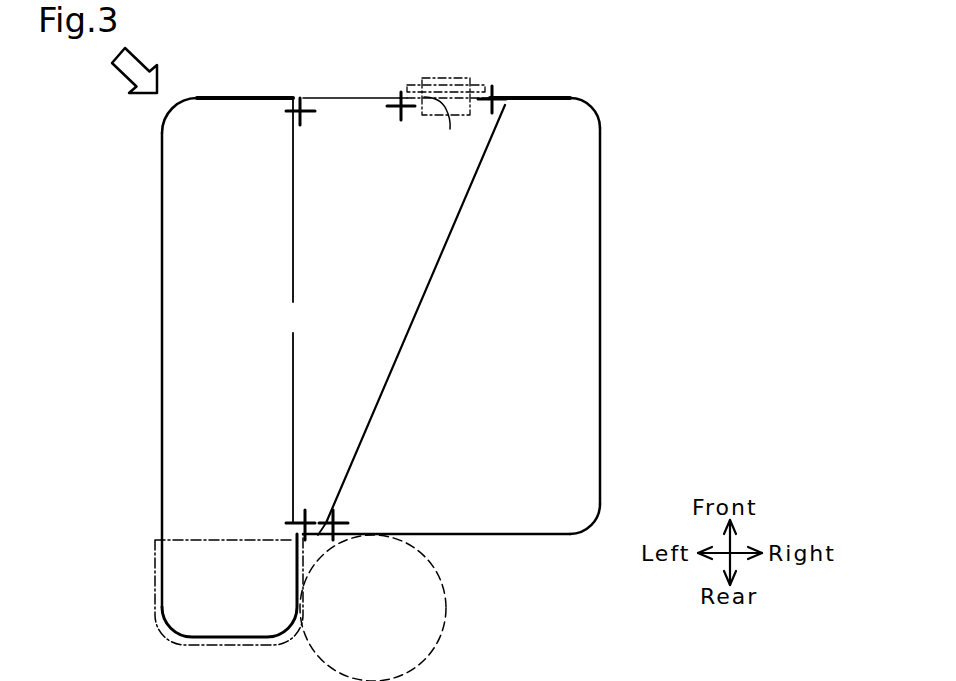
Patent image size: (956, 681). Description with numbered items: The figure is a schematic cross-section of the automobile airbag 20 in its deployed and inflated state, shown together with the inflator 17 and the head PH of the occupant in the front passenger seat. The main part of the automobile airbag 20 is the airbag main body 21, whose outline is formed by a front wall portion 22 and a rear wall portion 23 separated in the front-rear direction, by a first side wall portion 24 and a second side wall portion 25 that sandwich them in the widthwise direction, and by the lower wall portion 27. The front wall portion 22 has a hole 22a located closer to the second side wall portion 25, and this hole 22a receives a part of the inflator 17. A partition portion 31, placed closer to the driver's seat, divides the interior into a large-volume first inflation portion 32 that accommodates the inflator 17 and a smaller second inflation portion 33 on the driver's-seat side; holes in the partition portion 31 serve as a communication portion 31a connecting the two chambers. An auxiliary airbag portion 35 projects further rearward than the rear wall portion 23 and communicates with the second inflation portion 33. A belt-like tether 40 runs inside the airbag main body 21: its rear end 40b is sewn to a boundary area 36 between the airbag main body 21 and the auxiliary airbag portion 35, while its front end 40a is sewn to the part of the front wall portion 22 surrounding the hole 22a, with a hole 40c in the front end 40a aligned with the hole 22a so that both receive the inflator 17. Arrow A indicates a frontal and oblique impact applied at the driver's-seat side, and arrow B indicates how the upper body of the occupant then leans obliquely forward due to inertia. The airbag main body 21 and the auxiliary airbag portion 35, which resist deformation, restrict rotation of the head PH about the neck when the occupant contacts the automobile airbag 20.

The inflator 17 is at (453, 78).
The automobile airbag 20 is at (424, 609).
The airbag main body 21 is at (433, 537).
The front wall portion 22 is at (316, 98).
The hole 22a is at (450, 127).
The rear wall portion 23 is at (525, 537).
The first side wall portion 24 is at (162, 203).
The second side wall portion 25 is at (600, 256).
The lower wall portion 27 is at (343, 108).
The partition portion 31 is at (293, 230).
The communication portion 31a is at (293, 336).
The first inflation portion 32 is at (564, 98).
The second inflation portion 33 is at (249, 98).
The auxiliary airbag portion 35 is at (302, 592).
The boundary area 36 is at (348, 493).
The tether 40 is at (435, 265).
The front end 40a is at (497, 104).
The rear end 40b is at (340, 521).
The hole 40c is at (409, 111).
The arrow A is at (150, 62).
The arrow B is at (255, 492).
The head PH is at (445, 637).